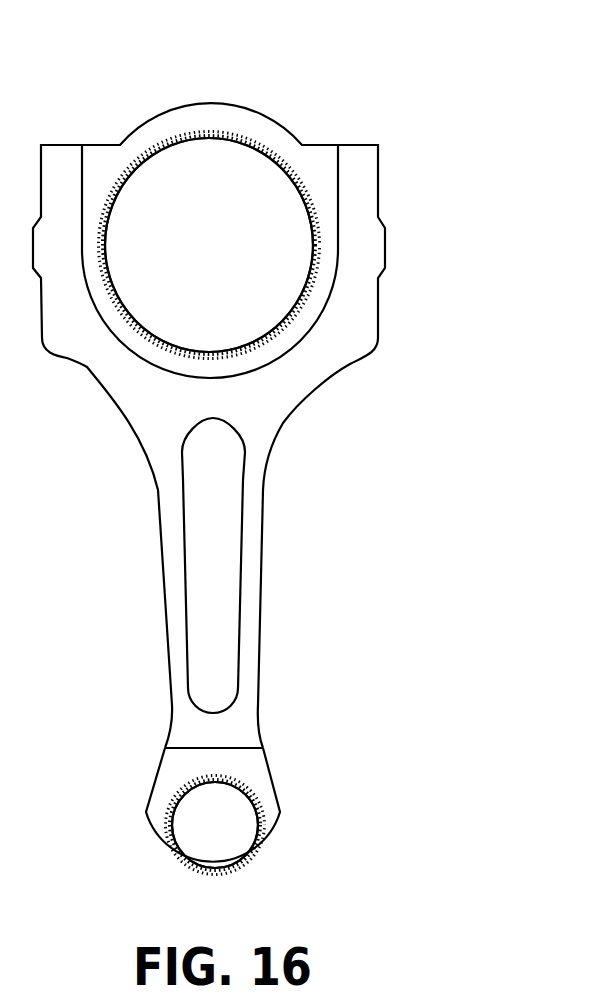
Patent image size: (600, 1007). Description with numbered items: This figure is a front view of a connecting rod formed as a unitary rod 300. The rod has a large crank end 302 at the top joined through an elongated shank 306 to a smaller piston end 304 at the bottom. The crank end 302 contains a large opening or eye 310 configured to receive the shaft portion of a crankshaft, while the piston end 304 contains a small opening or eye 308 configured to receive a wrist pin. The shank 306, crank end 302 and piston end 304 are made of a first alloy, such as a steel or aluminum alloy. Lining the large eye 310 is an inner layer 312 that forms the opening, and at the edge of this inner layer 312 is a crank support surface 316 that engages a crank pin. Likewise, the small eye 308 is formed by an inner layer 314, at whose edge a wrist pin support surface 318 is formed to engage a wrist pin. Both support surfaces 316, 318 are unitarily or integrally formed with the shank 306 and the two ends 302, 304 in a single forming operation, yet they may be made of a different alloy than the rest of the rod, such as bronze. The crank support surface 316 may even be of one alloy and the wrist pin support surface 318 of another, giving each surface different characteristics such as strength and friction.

The unitary rod 300 is at (264, 468).
The crank end 302 is at (362, 323).
The piston end 304 is at (270, 875).
The shank 306 is at (247, 582).
The small eye 308 is at (240, 818).
The large eye 310 is at (247, 202).
The inner layer 312 is at (237, 140).
The inner layer 314 is at (245, 793).
The crank support surface 316 is at (306, 256).
The wrist pin support surface 318 is at (252, 850).